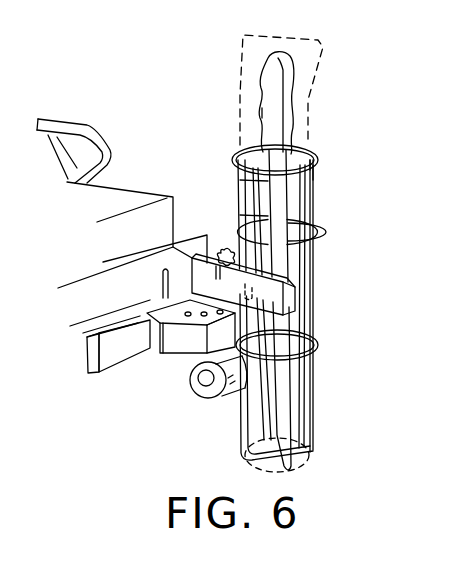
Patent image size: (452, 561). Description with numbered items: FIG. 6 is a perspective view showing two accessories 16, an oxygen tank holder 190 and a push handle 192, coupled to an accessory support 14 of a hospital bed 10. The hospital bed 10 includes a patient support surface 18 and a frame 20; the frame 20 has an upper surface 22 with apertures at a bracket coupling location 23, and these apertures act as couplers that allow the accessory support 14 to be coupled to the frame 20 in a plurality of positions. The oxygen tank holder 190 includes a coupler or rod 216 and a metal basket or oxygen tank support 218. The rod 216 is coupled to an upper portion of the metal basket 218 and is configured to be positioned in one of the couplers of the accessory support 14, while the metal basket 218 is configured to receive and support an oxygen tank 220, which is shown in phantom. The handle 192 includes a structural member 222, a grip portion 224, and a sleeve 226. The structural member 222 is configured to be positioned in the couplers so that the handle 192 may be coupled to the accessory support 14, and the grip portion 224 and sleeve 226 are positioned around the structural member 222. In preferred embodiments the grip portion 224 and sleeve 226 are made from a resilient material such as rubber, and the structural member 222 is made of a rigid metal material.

The hospital bed 10 is at (125, 130).
The accessory support 14 is at (213, 200).
The accessories 16 is at (353, 139).
The patient support surface 18 is at (106, 196).
The frame 20 is at (150, 346).
The upper surface 22 is at (160, 316).
The bracket coupling location 23 is at (175, 348).
The oxygen tank holder 190 is at (329, 182).
The handle 192 is at (326, 90).
The rod 216 is at (190, 230).
The metal basket 218 is at (316, 305).
The oxygen tank 220 is at (239, 90).
The structural member 222 is at (316, 236).
The grip portion 224 is at (270, 117).
The sleeve 226 is at (316, 268).